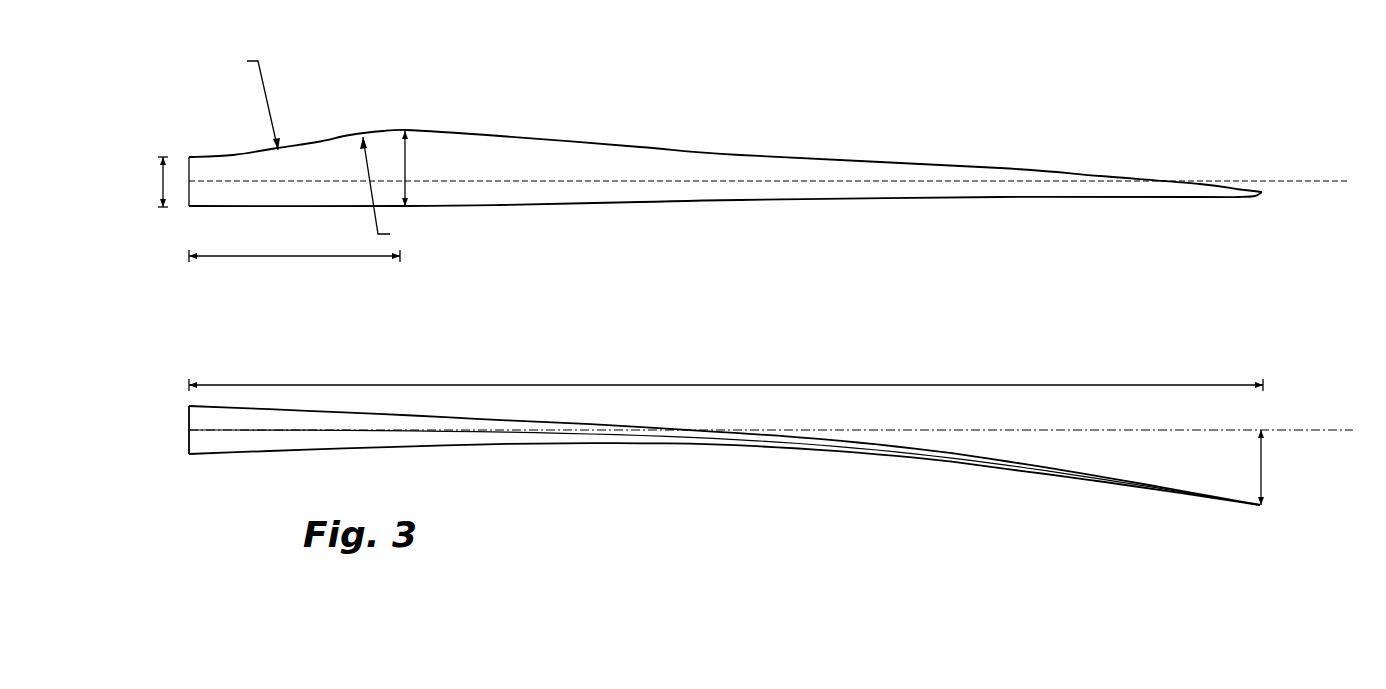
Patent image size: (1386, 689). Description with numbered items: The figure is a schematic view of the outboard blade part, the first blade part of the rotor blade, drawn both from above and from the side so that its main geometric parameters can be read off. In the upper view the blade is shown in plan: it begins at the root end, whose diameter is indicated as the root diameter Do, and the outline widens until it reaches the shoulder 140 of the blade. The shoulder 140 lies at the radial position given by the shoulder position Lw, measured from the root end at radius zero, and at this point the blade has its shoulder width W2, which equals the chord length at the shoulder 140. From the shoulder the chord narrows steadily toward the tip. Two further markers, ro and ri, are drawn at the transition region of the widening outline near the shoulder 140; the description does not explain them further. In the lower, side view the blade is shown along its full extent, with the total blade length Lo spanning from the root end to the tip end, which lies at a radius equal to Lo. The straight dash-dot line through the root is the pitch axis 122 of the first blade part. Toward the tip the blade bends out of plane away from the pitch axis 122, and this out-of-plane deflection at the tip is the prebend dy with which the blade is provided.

The pitch axis 122 is at (616, 180).
The shoulder 140 is at (406, 130).
The root diameter Do is at (159, 182).
The shoulder width W2 is at (423, 168).
The shoulder position Lw is at (294, 245).
The outer radius of widened portion ro is at (251, 99).
The inner radius of widened portion ri is at (385, 193).
The total blade length Lo is at (726, 375).
The prebend dy is at (1276, 467).